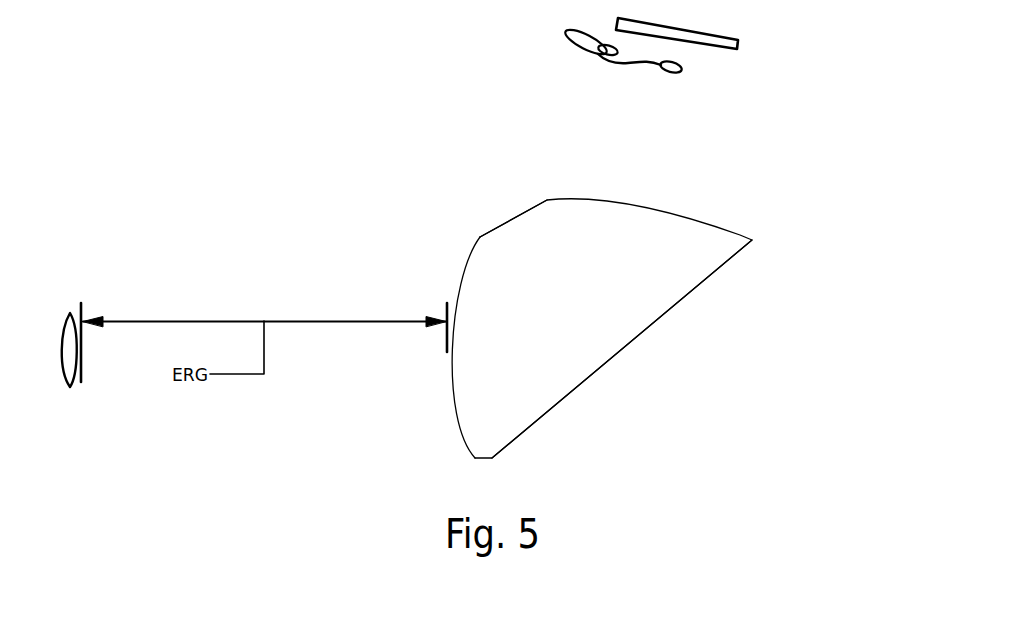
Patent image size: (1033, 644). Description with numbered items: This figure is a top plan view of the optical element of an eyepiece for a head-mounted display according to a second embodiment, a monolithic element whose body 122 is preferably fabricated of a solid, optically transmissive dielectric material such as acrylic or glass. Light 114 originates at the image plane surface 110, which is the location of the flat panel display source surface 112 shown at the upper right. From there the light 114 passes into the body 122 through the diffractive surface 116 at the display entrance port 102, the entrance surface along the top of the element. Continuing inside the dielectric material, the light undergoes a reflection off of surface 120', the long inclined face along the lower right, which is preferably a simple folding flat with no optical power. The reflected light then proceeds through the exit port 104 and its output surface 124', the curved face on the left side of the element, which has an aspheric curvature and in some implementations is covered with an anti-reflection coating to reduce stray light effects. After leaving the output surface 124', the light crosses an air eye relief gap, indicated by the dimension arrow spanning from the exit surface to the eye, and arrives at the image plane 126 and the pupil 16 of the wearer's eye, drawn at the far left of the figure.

The flat panel display source surface 112 is at (714, 36).
The light 114 is at (565, 33).
The image plane surface 110 is at (712, 50).
The body 122 is at (478, 238).
The display entrance port 102 is at (670, 321).
The diffractive surface 116 is at (662, 208).
The surface 120' is at (622, 349).
The exit port 104 is at (375, 350).
The output surface 124' is at (375, 350).
The image plane 126 is at (80, 379).
The pupil 16 is at (70, 387).